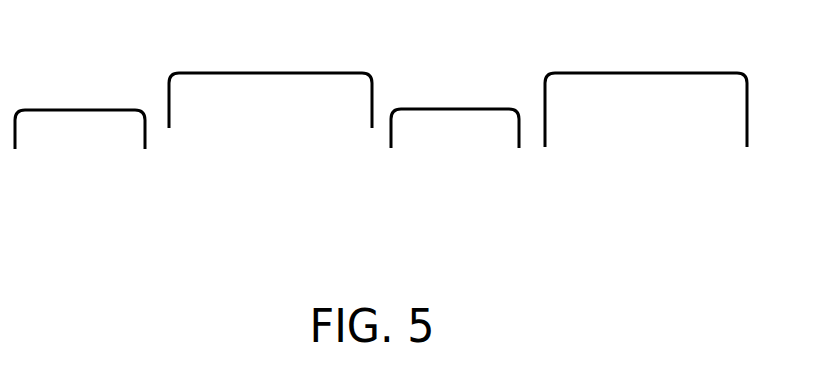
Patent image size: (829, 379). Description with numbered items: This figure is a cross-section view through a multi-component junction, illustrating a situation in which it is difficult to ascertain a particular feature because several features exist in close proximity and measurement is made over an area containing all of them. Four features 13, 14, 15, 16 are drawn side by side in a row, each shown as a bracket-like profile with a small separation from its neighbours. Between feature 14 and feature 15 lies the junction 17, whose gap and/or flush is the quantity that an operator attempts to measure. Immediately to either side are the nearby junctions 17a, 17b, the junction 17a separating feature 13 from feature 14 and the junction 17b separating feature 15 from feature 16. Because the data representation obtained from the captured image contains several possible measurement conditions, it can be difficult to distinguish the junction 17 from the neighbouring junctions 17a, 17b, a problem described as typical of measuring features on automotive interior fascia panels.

The feature 13 is at (97, 158).
The feature 14 is at (250, 159).
The feature 15 is at (435, 158).
The feature 16 is at (632, 158).
The junction 17 is at (383, 117).
The junction 17a is at (155, 118).
The junction 17b is at (533, 118).